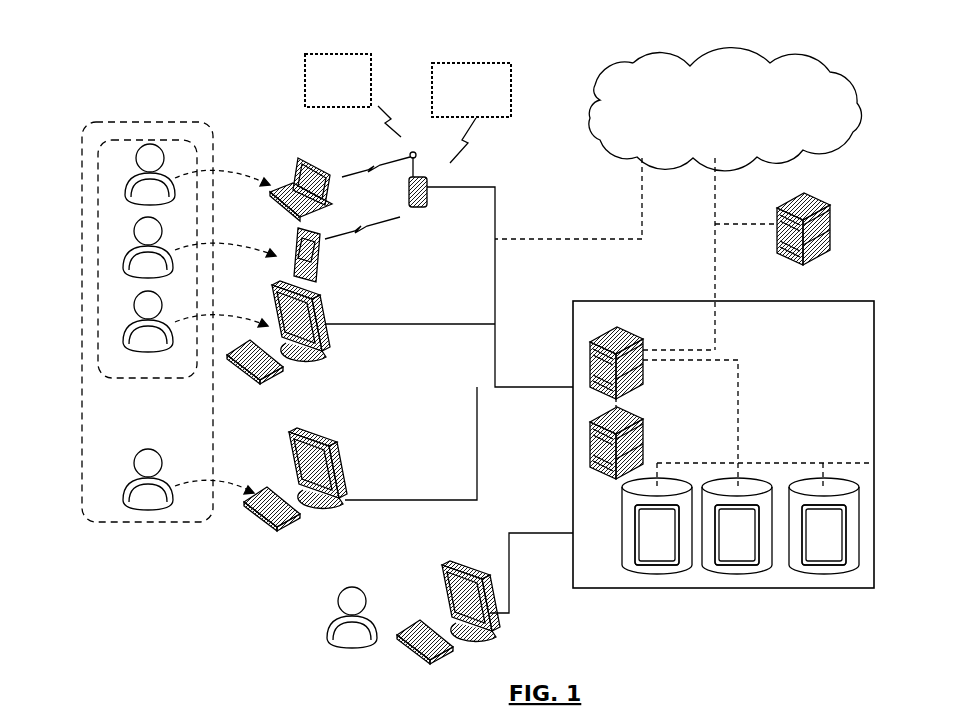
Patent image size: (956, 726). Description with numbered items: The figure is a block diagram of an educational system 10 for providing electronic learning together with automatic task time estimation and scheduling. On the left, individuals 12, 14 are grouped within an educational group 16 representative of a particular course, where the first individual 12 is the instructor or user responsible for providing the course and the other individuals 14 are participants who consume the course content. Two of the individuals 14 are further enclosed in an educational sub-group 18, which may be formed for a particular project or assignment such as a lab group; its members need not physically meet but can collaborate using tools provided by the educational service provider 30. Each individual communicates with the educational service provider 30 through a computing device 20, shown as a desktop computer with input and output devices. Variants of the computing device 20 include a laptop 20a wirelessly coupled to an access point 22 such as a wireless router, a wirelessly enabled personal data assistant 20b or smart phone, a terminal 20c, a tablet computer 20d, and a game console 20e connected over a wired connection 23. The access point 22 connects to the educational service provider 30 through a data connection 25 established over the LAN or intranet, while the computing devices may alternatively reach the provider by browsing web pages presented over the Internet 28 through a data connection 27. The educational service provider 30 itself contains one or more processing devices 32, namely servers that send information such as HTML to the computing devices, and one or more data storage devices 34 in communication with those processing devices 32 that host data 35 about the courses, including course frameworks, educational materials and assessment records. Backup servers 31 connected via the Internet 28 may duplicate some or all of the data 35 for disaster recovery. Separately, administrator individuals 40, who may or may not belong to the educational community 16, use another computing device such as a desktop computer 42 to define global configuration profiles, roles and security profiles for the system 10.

The educational system 10 is at (108, 96).
The individual 12 is at (125, 478).
The individuals 14 is at (125, 168).
The educational group 16 is at (82, 392).
The educational sub-group 18 is at (177, 140).
The computing device 20 is at (340, 478).
The laptop 20a is at (312, 162).
The personal data assistant 20b is at (312, 240).
The terminal 20c is at (326, 352).
The tablet computer 20d is at (305, 76).
The game console 20e is at (480, 63).
The access point 22 is at (422, 207).
The wired connection 23 is at (410, 325).
The data connection 25 is at (548, 390).
The data connection 27 is at (585, 239).
The Internet 28 is at (598, 98).
The educational service provider 30 is at (585, 301).
The backup servers 31 is at (822, 202).
The processing devices 32 is at (640, 334).
The data storage devices 34 is at (745, 487).
The data 35 is at (653, 566).
The individuals 40 is at (333, 612).
The desktop computer 42 is at (495, 630).